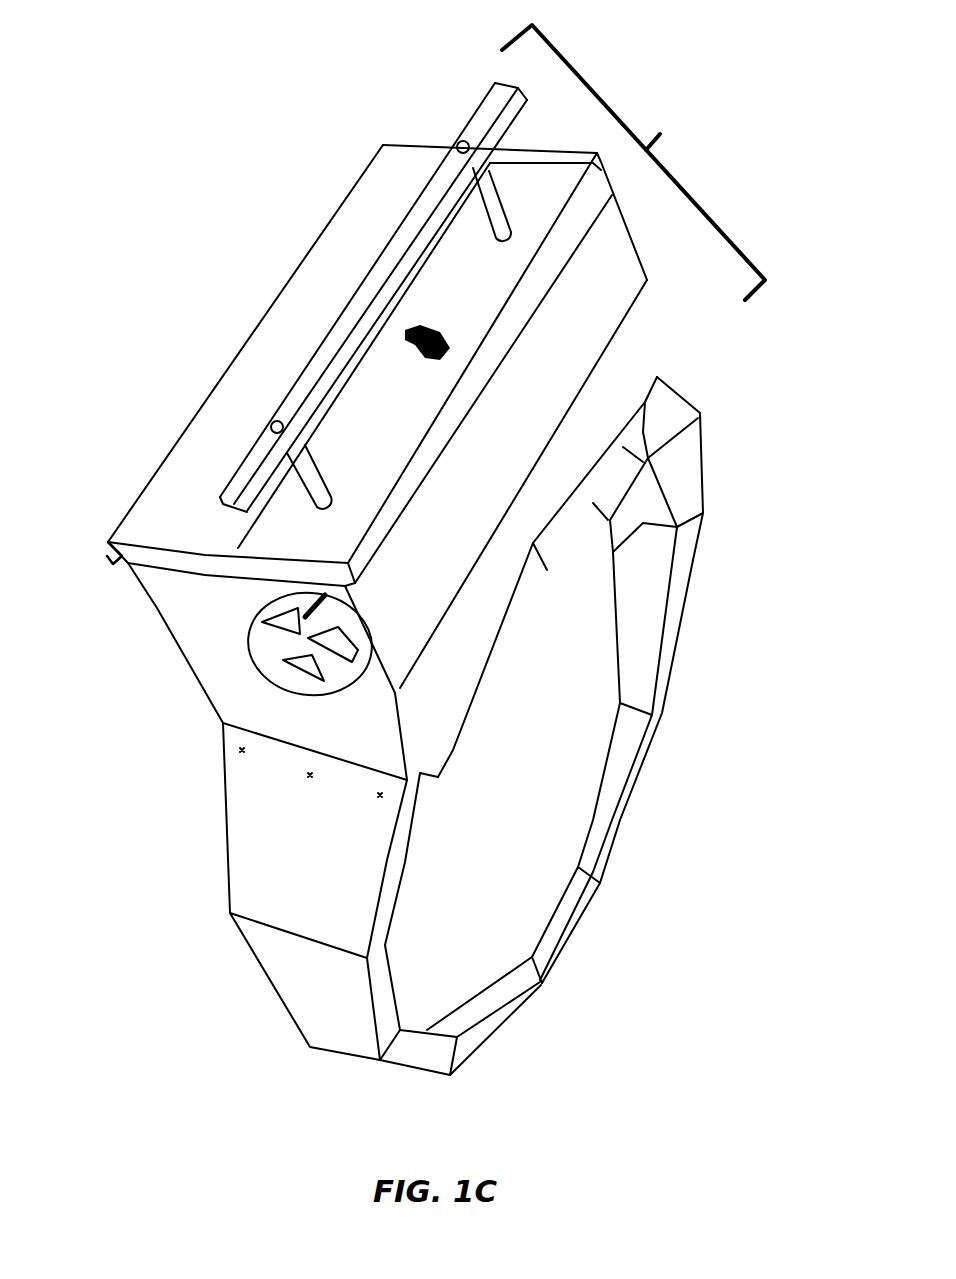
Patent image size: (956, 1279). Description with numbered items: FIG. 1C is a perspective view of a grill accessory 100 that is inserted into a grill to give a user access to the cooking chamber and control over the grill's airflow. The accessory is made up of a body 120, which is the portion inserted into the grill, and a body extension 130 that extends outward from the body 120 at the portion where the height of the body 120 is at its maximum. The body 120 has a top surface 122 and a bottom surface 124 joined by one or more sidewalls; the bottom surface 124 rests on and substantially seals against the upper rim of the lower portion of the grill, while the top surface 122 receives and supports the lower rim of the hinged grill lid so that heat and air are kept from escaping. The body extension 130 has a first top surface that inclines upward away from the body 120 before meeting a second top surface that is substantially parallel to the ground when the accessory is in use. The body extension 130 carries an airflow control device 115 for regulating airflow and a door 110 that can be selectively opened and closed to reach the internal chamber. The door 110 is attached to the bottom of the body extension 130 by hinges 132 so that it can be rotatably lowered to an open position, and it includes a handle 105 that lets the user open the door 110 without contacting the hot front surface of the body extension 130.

The grill accessory 100 is at (243, 97).
The handle 105 is at (385, 253).
The door 110 is at (237, 357).
The airflow control device 115 is at (273, 643).
The body 120 is at (708, 1080).
The top surface 122 is at (400, 838).
The bottom surface 124 is at (212, 816).
The body extension 130 is at (633, 162).
The hinge 132 is at (108, 541).